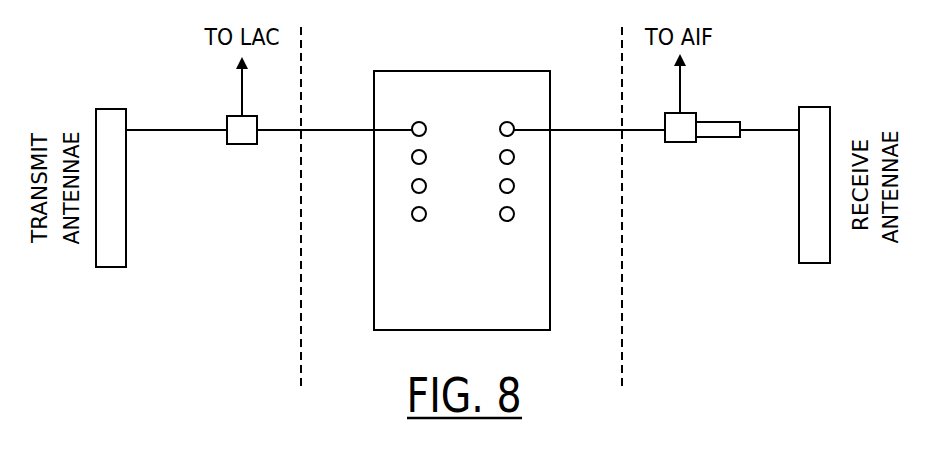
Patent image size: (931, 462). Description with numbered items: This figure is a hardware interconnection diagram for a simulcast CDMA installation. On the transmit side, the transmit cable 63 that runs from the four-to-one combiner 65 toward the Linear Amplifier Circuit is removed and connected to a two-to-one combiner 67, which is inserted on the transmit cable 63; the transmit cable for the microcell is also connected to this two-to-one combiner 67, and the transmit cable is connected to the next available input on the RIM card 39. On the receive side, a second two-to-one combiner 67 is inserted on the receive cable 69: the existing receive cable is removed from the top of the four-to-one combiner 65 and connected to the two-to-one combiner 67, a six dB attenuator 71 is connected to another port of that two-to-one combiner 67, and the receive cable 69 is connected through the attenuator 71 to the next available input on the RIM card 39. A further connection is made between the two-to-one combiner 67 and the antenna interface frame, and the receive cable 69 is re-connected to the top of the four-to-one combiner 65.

The RIM card 39 is at (428, 70).
The transmit cable 63 is at (187, 132).
The 4:1 combiner 65 is at (113, 267).
The 2:1 combiner 67 is at (242, 144).
The receive cable 69 is at (771, 131).
The 6 dB attenuator 71 is at (722, 118).